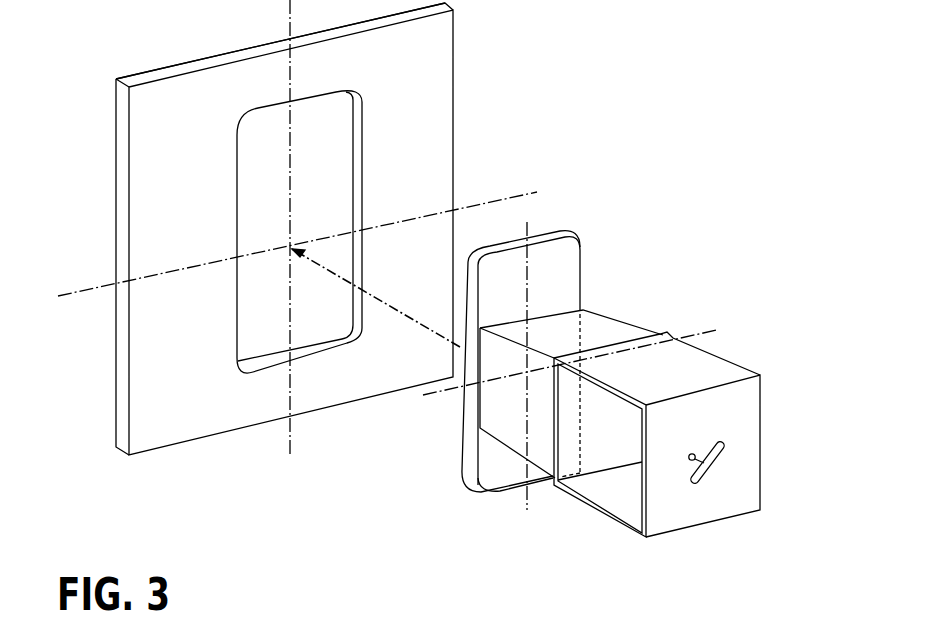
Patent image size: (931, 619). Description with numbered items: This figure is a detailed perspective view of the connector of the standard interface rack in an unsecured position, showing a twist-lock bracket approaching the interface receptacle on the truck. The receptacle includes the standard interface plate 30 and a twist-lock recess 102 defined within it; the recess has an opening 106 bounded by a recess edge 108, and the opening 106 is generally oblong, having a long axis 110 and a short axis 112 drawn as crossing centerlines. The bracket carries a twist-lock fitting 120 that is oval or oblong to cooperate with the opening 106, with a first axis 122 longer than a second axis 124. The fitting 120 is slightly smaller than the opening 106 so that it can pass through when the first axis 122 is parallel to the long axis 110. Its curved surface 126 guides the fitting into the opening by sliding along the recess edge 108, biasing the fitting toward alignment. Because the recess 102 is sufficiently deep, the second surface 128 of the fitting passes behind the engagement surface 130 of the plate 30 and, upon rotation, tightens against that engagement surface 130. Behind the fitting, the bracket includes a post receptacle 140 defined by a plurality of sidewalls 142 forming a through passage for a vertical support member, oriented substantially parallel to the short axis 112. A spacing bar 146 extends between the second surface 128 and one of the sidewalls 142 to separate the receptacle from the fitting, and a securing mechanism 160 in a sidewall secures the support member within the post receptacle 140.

The standard interface plate 30 is at (140, 157).
The twist-lock recess 102 is at (322, 221).
The opening 106 is at (313, 142).
The recess edge 108 is at (363, 139).
The long axis 110 is at (290, 23).
The short axis 112 is at (88, 294).
The twist-lock fitting 120 is at (565, 272).
The first axis 122 is at (532, 227).
The second axis 124 is at (710, 329).
The curved surface 126 is at (462, 388).
The second surface 128 is at (497, 475).
The engagement surface 130 is at (182, 63).
The post receptacle 140 is at (612, 488).
The sidewalls 142 is at (753, 428).
The spacing bar 146 is at (508, 427).
The securing mechanism 160 is at (707, 479).